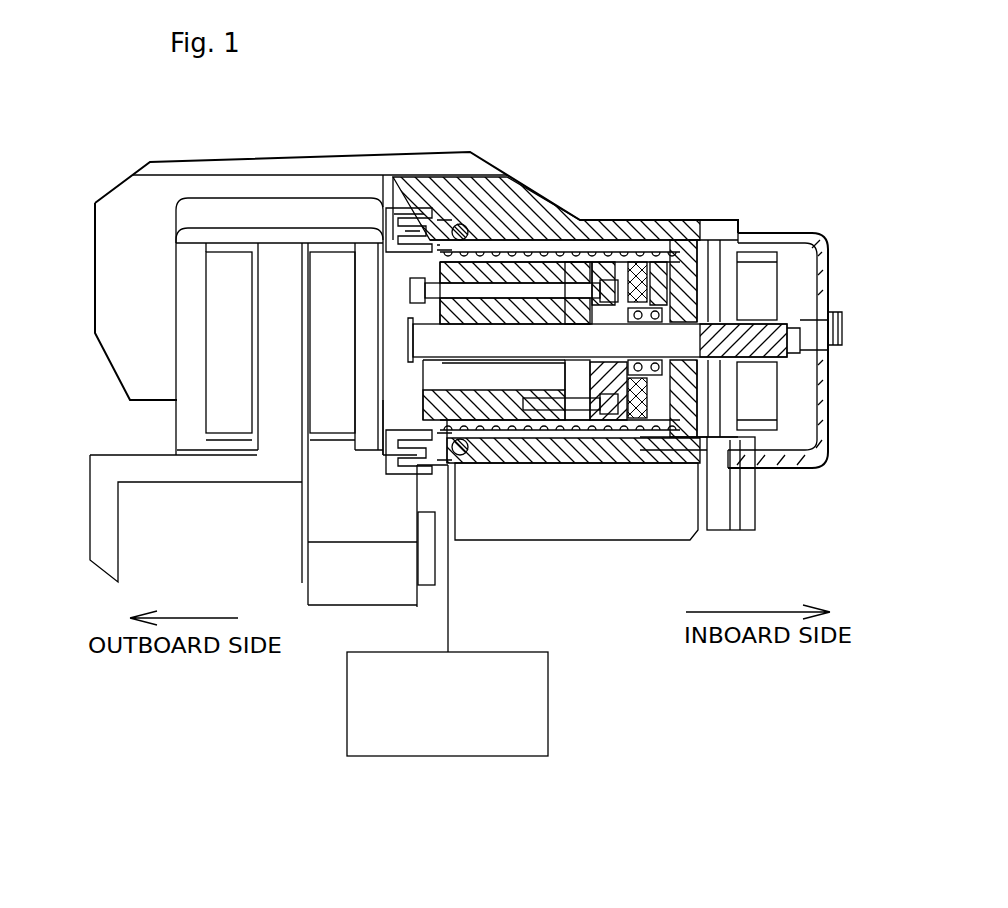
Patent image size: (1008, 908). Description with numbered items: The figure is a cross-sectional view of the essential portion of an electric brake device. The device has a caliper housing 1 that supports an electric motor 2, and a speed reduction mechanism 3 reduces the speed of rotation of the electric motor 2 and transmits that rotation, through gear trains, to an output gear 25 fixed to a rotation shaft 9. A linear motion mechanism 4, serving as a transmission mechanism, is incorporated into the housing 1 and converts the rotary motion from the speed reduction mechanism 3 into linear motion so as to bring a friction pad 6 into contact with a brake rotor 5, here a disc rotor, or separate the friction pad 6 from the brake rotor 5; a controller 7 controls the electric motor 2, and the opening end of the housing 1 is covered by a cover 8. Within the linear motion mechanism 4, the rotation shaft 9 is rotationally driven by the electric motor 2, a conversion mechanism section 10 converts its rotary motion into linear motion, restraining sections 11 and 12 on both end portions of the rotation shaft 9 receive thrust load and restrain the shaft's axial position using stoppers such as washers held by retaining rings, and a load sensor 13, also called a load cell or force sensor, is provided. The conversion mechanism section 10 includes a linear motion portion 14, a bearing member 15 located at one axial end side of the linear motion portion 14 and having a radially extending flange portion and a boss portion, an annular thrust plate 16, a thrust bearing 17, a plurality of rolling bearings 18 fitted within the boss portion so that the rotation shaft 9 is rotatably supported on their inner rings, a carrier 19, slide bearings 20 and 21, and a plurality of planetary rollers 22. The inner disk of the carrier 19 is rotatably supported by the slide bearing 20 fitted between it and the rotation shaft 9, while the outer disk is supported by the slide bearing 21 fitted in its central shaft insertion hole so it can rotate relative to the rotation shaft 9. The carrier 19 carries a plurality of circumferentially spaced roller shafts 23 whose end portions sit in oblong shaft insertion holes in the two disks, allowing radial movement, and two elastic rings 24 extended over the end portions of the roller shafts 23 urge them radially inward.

The housing 1 is at (462, 180).
The electric motor 2 is at (675, 515).
The speed reduction mechanism 3 is at (770, 252).
The linear motion mechanism 4 is at (541, 225).
The brake rotor 5 is at (273, 450).
The friction pad 6 is at (228, 422).
The controller 7 is at (548, 676).
The cover 8 is at (830, 252).
The rotation shaft 9 is at (616, 322).
The conversion mechanism section 10 is at (558, 250).
The restraining section 11 is at (410, 305).
The restraining section 12 is at (784, 318).
The load sensor 13 is at (684, 240).
The linear motion portion 14 is at (503, 435).
The bearing member 15 is at (665, 262).
The annular thrust plate 16 is at (632, 262).
The thrust bearing 17 is at (618, 432).
The rolling bearings 18 is at (653, 368).
The carrier 19 is at (478, 432).
The slide bearing 20 is at (572, 435).
The slide bearing 21 is at (423, 247).
The planetary rollers 22 is at (495, 255).
The roller shafts 23 is at (473, 300).
The elastic rings 24 is at (385, 402).
The output gear 25 is at (760, 405).